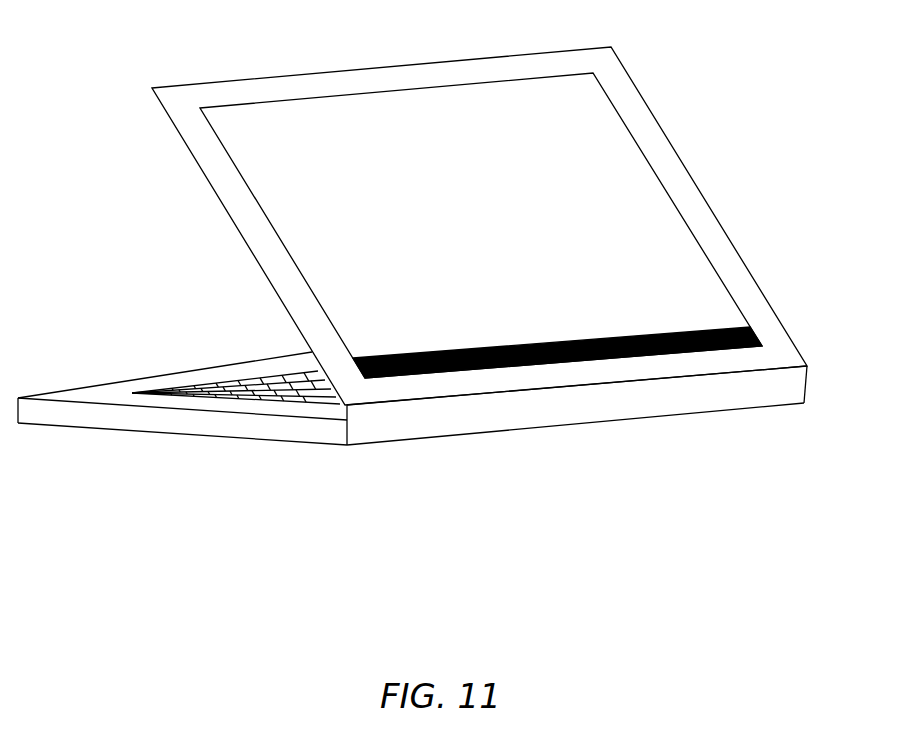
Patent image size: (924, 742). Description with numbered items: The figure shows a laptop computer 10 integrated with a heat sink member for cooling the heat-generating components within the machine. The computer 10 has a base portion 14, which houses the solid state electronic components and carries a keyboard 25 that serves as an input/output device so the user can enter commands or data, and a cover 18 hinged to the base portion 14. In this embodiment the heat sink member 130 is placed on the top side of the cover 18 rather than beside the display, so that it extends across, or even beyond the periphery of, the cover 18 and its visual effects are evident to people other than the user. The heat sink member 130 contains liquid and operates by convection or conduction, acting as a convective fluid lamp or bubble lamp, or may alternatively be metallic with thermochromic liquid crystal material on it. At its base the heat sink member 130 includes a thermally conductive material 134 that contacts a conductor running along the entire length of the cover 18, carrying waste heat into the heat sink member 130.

The laptop computer 10 is at (582, 549).
The base portion 14 is at (37, 410).
The cover 18 is at (318, 73).
The keyboard 25 is at (253, 397).
The heat sink member 130 is at (607, 200).
The thermally conductive material 134 is at (695, 327).